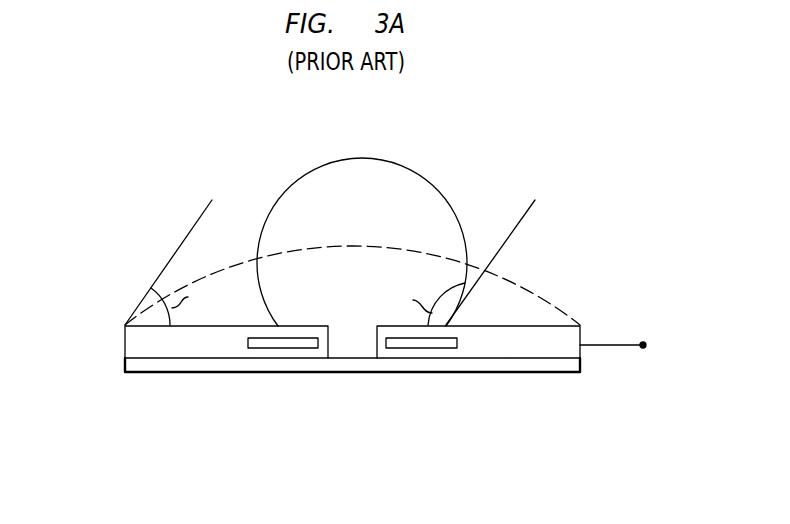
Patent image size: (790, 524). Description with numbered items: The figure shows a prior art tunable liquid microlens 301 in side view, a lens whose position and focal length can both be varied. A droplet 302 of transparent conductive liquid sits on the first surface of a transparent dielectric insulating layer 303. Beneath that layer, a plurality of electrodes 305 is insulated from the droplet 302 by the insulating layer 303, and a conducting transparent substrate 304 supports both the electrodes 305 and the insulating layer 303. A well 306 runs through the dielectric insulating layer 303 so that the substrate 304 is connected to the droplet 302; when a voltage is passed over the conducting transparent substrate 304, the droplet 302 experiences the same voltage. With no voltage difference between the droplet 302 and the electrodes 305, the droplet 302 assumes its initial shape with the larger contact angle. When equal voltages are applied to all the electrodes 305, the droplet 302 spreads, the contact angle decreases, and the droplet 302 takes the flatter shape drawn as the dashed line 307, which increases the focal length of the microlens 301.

The tunable liquid microlens 301 is at (80, 188).
The droplet 302 is at (418, 177).
The dielectric insulating layer 303 is at (123, 338).
The conducting transparent substrate 304 is at (233, 373).
The electrodes 305 is at (298, 349).
The well 306 is at (353, 337).
The dashed line 307 is at (533, 288).